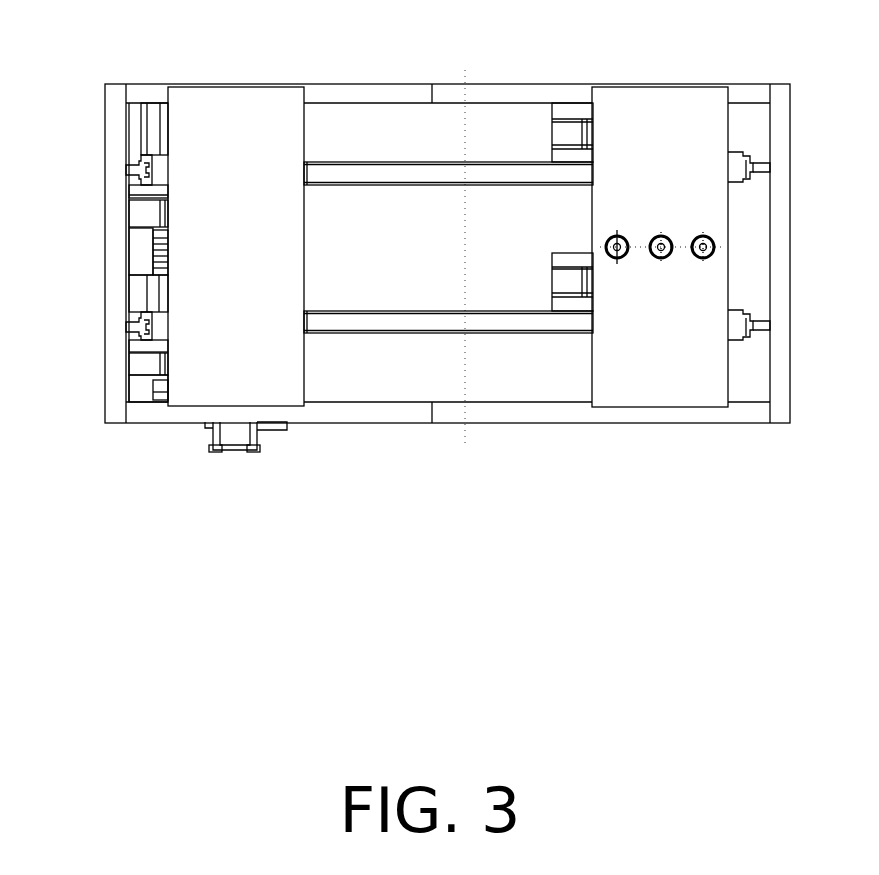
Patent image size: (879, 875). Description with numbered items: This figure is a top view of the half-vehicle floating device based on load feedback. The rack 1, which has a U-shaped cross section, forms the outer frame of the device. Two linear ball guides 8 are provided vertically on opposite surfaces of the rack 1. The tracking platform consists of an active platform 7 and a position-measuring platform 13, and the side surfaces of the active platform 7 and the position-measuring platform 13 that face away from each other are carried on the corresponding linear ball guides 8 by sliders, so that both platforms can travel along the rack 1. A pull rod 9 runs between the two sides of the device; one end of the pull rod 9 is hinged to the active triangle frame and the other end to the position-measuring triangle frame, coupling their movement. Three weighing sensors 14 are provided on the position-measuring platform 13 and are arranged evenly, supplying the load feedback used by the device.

The rack 1 is at (113, 112).
The active platform 7 is at (213, 122).
The linear ball guide 8 is at (143, 160).
The pull rod 9 is at (345, 177).
The position-measuring platform 13 is at (625, 135).
The weighing sensor 14 is at (657, 235).